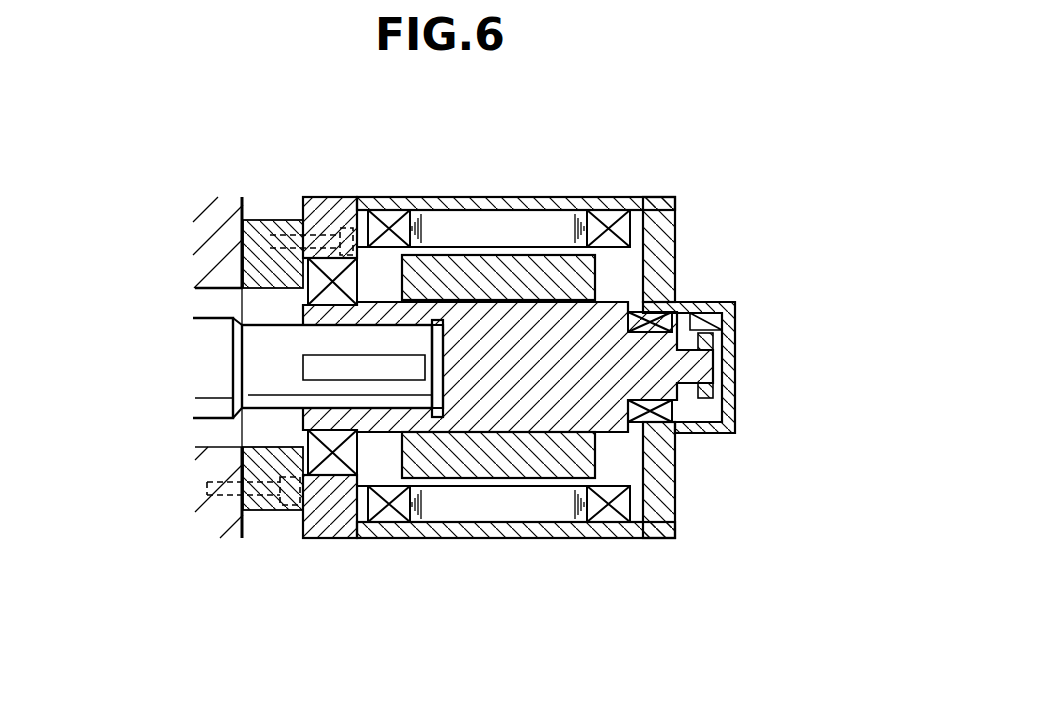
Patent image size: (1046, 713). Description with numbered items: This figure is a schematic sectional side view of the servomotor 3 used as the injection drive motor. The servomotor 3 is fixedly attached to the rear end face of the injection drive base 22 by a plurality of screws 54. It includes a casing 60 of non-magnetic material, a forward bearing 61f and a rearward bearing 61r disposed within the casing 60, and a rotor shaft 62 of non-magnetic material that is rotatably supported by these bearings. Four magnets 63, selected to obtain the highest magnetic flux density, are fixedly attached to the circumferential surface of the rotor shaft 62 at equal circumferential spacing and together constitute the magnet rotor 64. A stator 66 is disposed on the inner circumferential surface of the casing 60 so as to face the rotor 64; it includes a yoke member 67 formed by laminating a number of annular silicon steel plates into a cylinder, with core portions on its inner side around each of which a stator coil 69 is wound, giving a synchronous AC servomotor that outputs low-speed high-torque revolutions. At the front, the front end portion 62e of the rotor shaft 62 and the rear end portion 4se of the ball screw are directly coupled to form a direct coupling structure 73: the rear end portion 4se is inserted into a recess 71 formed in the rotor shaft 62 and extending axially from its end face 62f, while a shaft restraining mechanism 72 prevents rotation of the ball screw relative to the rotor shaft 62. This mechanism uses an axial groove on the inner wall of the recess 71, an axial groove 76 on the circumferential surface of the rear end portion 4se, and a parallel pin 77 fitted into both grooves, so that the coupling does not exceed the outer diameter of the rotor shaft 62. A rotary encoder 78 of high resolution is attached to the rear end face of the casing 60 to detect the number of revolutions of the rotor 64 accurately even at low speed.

The servomotor 3 is at (690, 191).
The injection drive base 22 is at (250, 200).
The rear end portion of the ball screw 4se is at (385, 300).
The screws 54 is at (262, 512).
The casing 60 is at (517, 197).
The forward bearing 61f is at (335, 440).
The rearward bearing 61r is at (655, 430).
The rotor shaft 62 is at (557, 433).
The front end portion of the rotor shaft 62e is at (330, 474).
The end face of the rotor shaft 62f is at (303, 420).
The magnets 63 is at (470, 255).
The rotor 64 is at (611, 288).
The stator 66 is at (575, 210).
The yoke member 67 is at (552, 210).
The stator coil 69 is at (620, 210).
The recess 71 is at (423, 408).
The shaft restraining mechanism 72 is at (292, 360).
The direct coupling structure 73 is at (288, 317).
The groove 76 is at (258, 376).
The parallel pin 77 is at (330, 350).
The rotary encoder 78 is at (709, 442).